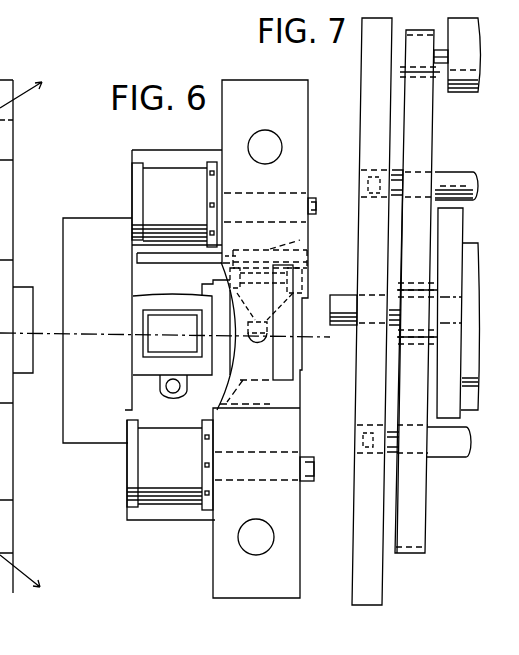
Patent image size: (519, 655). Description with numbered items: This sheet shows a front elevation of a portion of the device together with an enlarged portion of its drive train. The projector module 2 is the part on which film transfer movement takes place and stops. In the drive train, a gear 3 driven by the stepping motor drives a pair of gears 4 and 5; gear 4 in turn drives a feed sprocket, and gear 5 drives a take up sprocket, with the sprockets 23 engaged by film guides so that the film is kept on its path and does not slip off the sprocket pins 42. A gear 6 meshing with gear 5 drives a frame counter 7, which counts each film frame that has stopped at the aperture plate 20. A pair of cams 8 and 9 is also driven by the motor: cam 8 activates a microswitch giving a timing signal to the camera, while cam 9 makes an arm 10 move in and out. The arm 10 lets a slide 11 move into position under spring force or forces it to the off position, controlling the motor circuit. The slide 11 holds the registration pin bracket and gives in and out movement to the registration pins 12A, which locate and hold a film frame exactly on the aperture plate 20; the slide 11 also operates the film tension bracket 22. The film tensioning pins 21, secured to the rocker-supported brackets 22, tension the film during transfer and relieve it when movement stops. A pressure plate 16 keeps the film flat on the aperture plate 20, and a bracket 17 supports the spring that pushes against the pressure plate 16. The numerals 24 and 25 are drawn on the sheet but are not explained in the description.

In FIG. 6, the projector module 2 is at (243, 87).
In FIG. 7, the gear 3 is at (403, 338).
In FIG. 7, the gear 4 is at (413, 528).
In FIG. 7, the gear 5 is at (417, 143).
In FIG. 7, the gear 6 is at (418, 42).
In FIG. 7, the frame counter 7 is at (457, 30).
In FIG. 7, the cam 8 is at (463, 386).
In FIG. 7, the cam 9 is at (457, 228).
In FIG. 7, the arm 10 is at (343, 305).
In FIG. 6, the slide 11 is at (291, 357).
In FIG. 6, the registration pins 12A is at (205, 282).
In FIG. 6, the pressure plate 16 is at (145, 385).
In FIG. 6, the bracket 17 is at (185, 395).
In FIG. 6, the aperture plate 20 is at (143, 350).
In FIG. 6, the film tensioning pins 21 is at (140, 262).
In FIG. 6, the film tension bracket 22 is at (300, 242).
In FIG. 6, the sprockets 23 is at (166, 497).
In FIG. 6, the stop tab 24 is at (307, 457).
In FIG. 7, the shaft 25 is at (444, 447).
In FIG. 6, the sprocket pins 42 is at (210, 152).